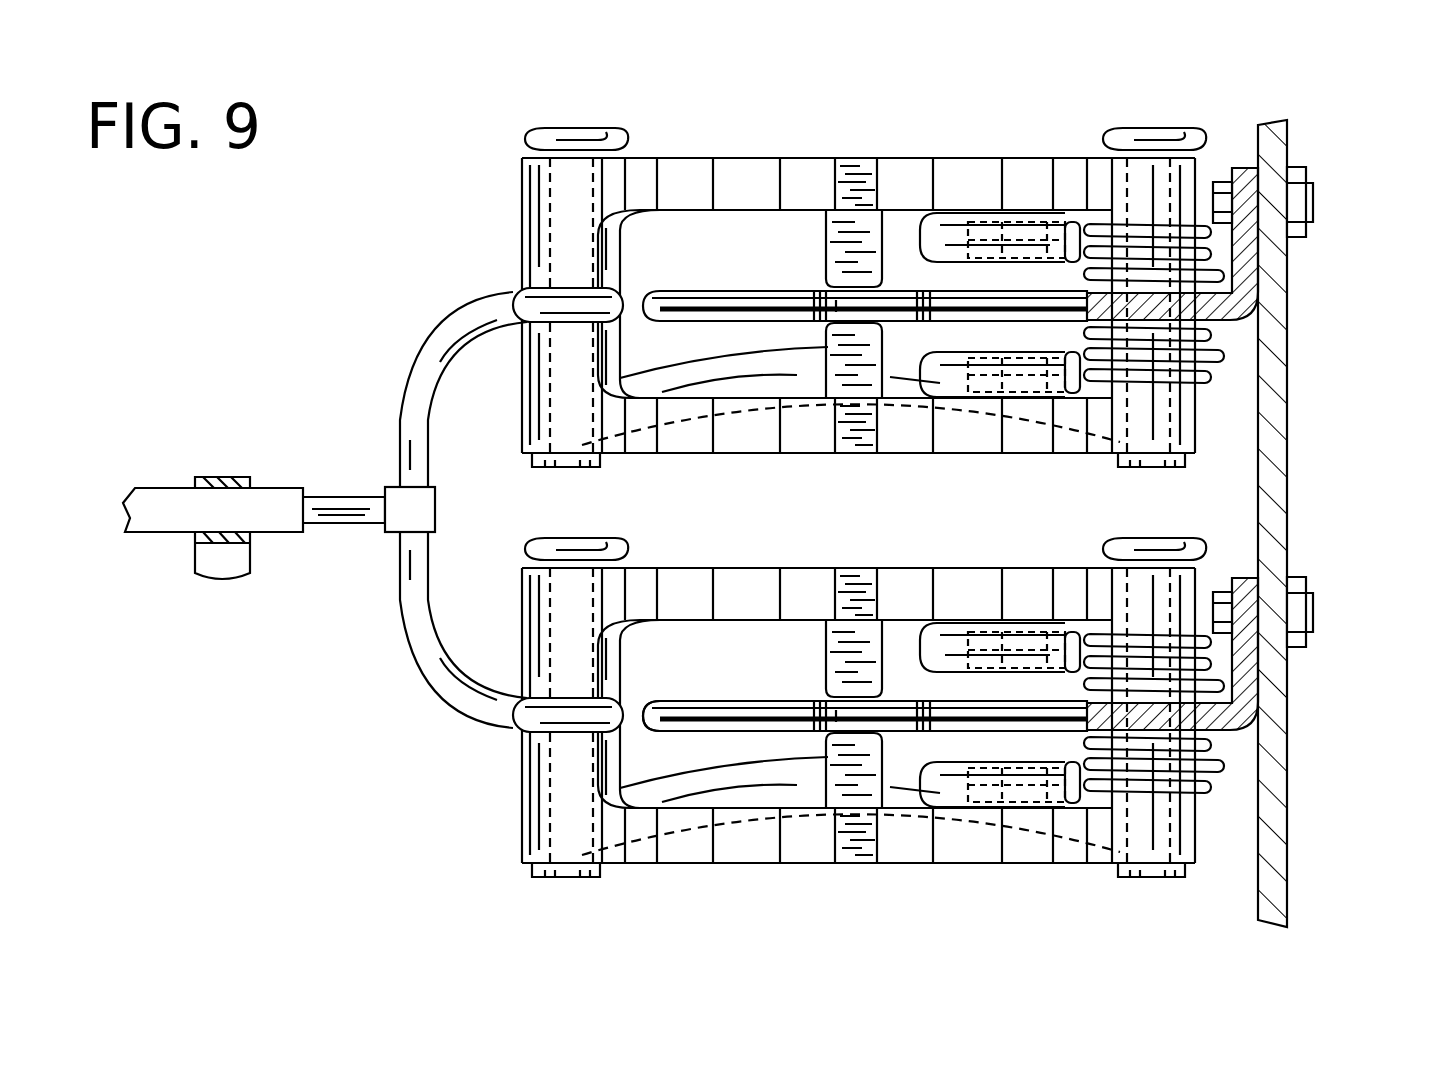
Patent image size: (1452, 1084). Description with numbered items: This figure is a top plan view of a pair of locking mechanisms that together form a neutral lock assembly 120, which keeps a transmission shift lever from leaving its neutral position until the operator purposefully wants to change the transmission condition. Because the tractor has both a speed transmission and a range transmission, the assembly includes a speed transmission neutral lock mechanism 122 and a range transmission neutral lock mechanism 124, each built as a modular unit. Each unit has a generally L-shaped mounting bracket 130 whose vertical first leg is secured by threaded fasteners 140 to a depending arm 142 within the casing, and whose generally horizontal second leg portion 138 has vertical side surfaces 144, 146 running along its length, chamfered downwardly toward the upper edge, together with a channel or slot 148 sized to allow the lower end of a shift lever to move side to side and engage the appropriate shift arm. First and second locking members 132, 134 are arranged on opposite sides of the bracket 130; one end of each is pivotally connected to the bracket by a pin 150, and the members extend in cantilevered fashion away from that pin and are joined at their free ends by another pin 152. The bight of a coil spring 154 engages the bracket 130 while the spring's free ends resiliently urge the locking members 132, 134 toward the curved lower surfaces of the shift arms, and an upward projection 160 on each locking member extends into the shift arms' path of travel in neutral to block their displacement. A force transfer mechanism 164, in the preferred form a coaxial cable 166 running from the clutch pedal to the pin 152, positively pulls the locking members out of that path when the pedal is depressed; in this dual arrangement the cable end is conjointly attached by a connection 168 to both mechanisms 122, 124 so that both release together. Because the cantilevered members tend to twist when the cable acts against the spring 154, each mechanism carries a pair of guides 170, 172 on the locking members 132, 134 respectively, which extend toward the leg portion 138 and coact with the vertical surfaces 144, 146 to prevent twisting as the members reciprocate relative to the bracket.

The neutral lock assembly 120 is at (751, 512).
The speed transmission neutral lock mechanism 122 is at (946, 714).
The range transmission neutral lock mechanism 124 is at (918, 133).
The mounting bracket 130 is at (706, 696).
The first locking member 132 is at (943, 872).
The second locking member 134 is at (683, 562).
The second leg portion 138 is at (773, 698).
The threaded fasteners 140 is at (1293, 590).
The depending arm 142 is at (1283, 512).
The vertical side surface 144 is at (652, 728).
The vertical side surface 146 is at (673, 697).
The channel or slot 148 is at (907, 722).
The pin 150 is at (1137, 878).
The pin 152 is at (561, 878).
The coil spring 154 is at (1200, 787).
The upward projection 160 is at (850, 582).
The force transfer mechanism 164 is at (162, 486).
The coaxial cable 166 is at (340, 520).
The connection 168 is at (410, 389).
The guide 170 is at (835, 787).
The guide 172 is at (867, 653).